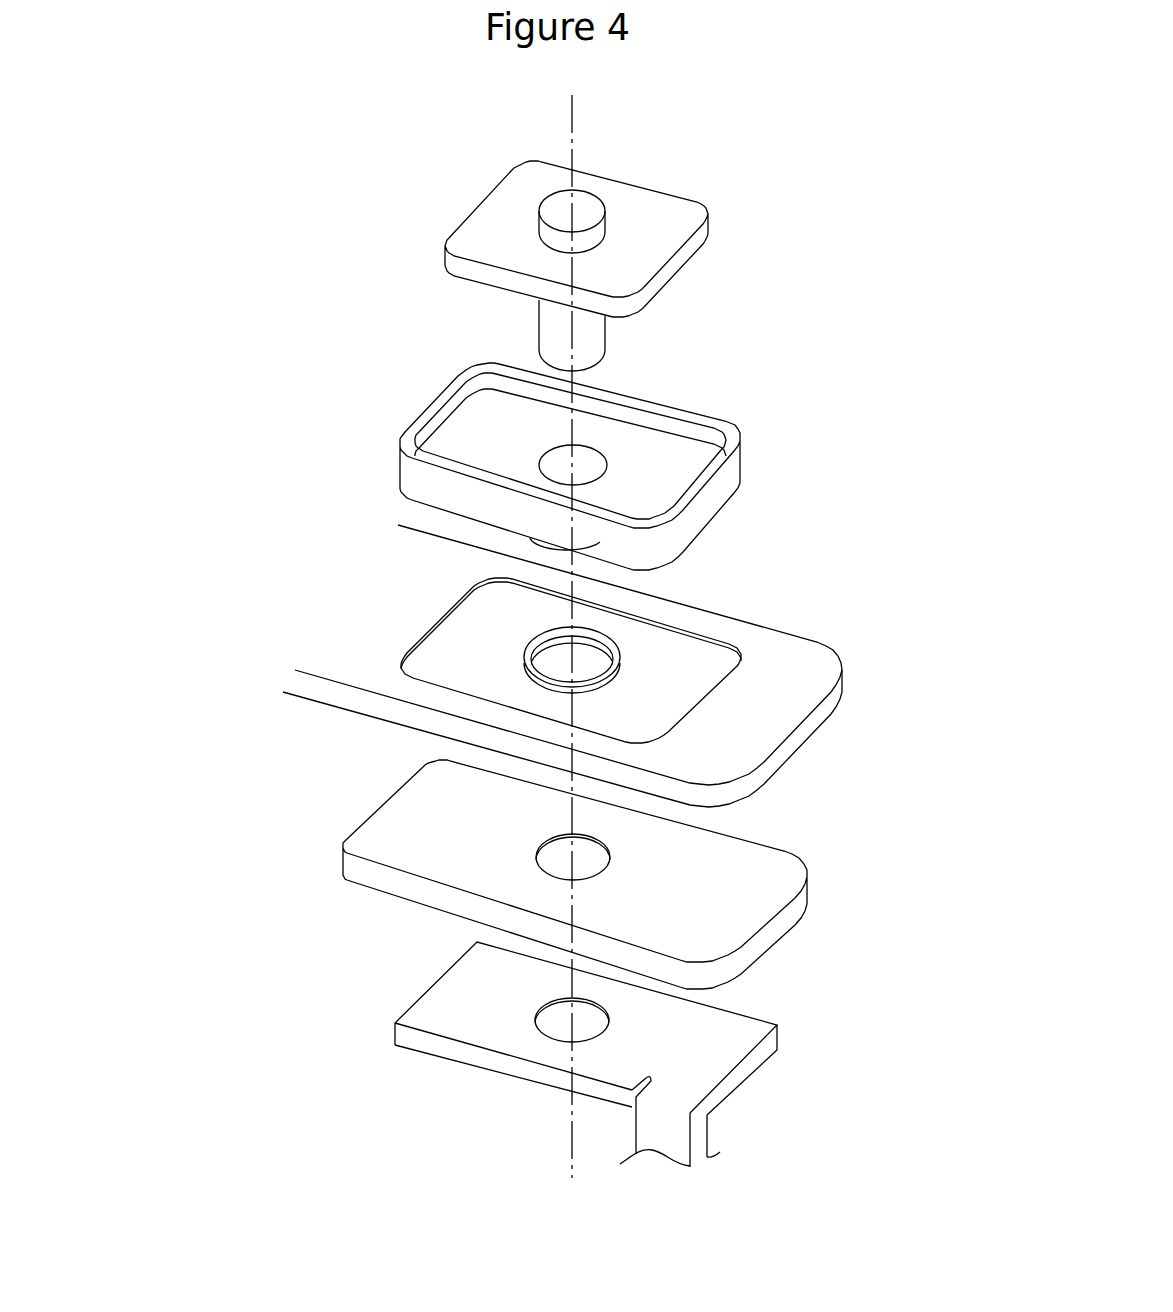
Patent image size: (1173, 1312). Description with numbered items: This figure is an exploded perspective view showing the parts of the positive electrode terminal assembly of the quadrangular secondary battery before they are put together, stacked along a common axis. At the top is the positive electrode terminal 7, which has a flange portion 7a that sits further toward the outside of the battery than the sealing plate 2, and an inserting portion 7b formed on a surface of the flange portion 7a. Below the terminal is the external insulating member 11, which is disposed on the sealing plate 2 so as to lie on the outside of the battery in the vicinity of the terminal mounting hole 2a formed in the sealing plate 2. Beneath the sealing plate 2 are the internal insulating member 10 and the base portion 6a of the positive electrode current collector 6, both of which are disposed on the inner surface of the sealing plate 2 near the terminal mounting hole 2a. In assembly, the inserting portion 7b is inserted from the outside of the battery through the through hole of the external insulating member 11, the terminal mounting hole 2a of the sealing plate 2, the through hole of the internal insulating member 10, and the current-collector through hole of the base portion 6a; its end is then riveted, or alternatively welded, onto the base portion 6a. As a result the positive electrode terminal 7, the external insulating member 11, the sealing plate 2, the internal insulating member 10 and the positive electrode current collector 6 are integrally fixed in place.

The positive electrode terminal 7 is at (559, 266).
The flange portion 7a is at (682, 229).
The inserting portion 7b is at (593, 338).
The external insulating member 11 is at (733, 477).
The sealing plate 2 is at (590, 666).
The terminal mounting hole 2a is at (617, 647).
The internal insulating member 10 is at (768, 862).
The positive electrode current collector 6 is at (568, 1054).
The base portion 6a is at (737, 1022).